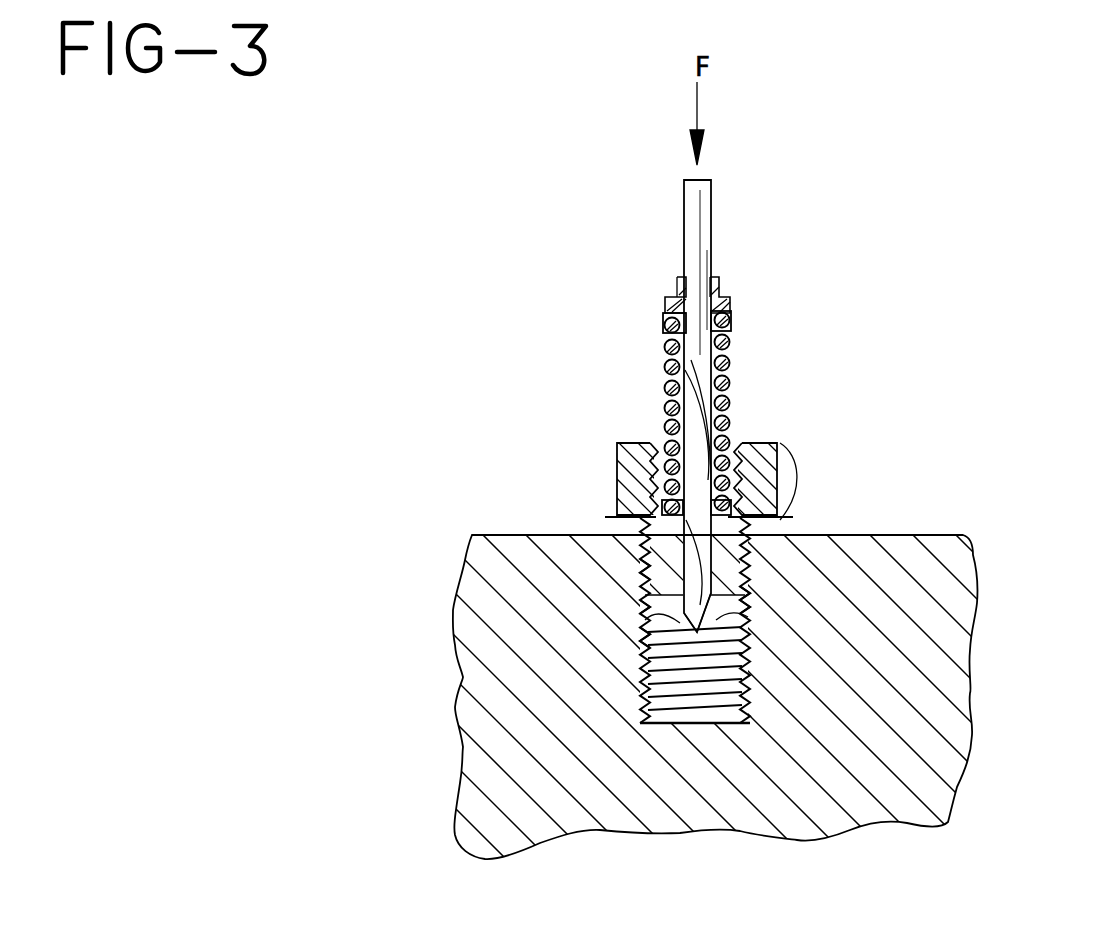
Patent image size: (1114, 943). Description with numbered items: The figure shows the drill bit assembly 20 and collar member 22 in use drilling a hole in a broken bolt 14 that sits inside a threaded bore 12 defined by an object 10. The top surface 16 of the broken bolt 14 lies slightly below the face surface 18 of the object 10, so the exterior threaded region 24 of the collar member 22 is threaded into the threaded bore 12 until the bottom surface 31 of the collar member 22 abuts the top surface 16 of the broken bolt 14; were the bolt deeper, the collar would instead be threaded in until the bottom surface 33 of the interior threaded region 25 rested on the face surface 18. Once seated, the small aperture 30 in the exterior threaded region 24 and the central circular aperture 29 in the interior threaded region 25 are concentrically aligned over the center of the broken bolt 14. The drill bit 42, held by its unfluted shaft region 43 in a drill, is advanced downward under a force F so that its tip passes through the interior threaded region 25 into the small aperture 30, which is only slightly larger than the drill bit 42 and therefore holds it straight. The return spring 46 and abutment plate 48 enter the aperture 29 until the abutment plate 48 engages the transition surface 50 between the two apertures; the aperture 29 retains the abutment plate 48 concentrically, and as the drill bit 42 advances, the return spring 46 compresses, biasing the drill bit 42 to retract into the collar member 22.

The object 10 is at (970, 667).
The threaded bore 12 is at (745, 625).
The broken bolt 14 is at (700, 688).
The top surface 16 is at (640, 627).
The face surface 18 is at (565, 537).
The drill bit assembly 20 is at (712, 273).
The collar member 22 is at (757, 442).
The exterior threaded region 24 is at (778, 522).
The interior threaded region 25 is at (800, 498).
The central circular aperture 29 is at (748, 440).
The central circular aperture 30 is at (645, 570).
The bottom surface 31 is at (640, 610).
The bottom surface 33 is at (640, 520).
The drill bit 42 is at (775, 597).
The unfluted shaft region 43 is at (712, 198).
The return spring 46 is at (735, 345).
The abutment plate 48 is at (660, 510).
The transition surface 50 is at (683, 597).